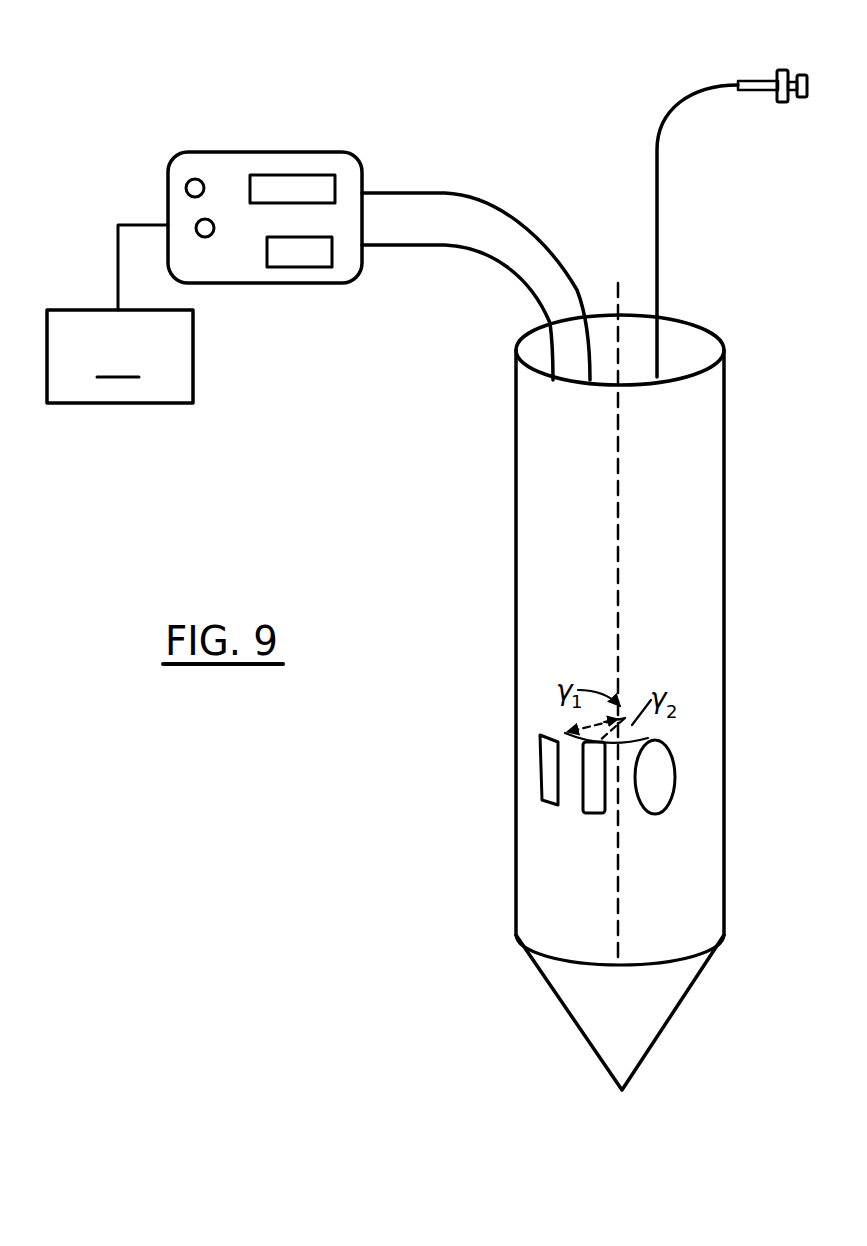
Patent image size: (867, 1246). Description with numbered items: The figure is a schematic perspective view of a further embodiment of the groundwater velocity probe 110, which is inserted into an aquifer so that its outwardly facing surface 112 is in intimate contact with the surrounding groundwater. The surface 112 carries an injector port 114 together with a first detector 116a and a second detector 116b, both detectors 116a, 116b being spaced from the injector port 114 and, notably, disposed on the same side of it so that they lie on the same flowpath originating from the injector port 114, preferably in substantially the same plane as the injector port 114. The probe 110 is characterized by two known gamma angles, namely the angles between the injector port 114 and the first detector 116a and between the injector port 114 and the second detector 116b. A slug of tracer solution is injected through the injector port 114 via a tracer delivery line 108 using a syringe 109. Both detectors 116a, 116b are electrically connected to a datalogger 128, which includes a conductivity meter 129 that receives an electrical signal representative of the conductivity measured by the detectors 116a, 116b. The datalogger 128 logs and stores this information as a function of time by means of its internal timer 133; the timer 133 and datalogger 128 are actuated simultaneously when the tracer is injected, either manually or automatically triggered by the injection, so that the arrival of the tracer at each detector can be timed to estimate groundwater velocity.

The tracer delivery line 108 is at (657, 143).
The syringe 109 is at (762, 82).
The probe 110 is at (755, 362).
The outwardly facing surface 112 is at (686, 552).
The injector port 114 is at (658, 801).
The first detector 116a is at (594, 795).
The second detector 116b is at (548, 786).
The datalogger 128 is at (227, 143).
The conductivity meter 129 is at (332, 260).
The internal timer 133 is at (336, 185).